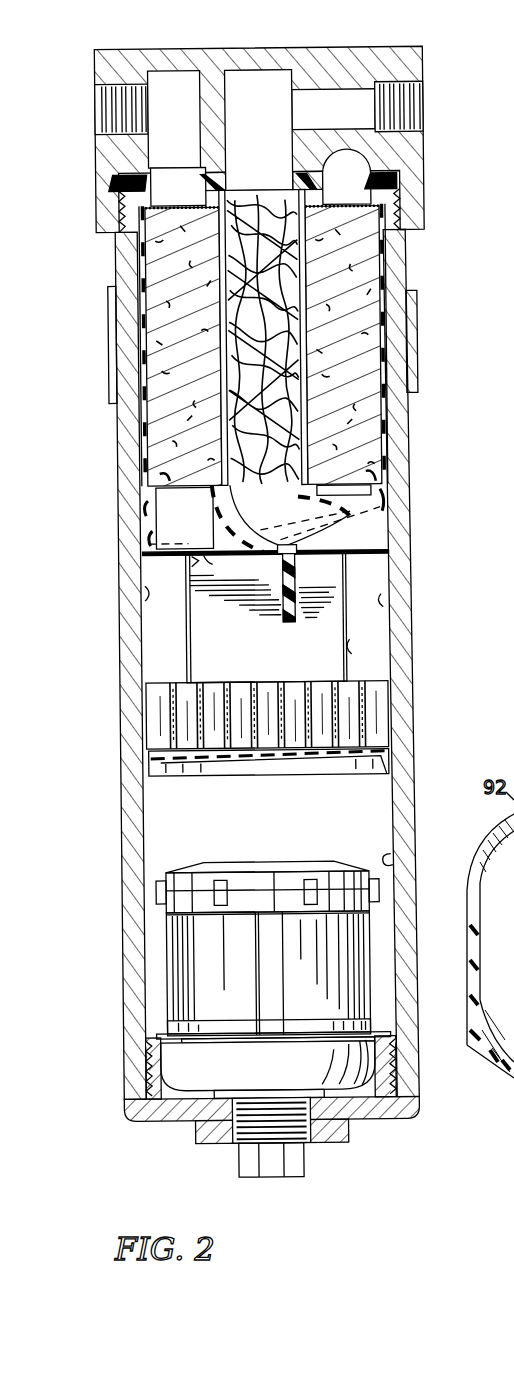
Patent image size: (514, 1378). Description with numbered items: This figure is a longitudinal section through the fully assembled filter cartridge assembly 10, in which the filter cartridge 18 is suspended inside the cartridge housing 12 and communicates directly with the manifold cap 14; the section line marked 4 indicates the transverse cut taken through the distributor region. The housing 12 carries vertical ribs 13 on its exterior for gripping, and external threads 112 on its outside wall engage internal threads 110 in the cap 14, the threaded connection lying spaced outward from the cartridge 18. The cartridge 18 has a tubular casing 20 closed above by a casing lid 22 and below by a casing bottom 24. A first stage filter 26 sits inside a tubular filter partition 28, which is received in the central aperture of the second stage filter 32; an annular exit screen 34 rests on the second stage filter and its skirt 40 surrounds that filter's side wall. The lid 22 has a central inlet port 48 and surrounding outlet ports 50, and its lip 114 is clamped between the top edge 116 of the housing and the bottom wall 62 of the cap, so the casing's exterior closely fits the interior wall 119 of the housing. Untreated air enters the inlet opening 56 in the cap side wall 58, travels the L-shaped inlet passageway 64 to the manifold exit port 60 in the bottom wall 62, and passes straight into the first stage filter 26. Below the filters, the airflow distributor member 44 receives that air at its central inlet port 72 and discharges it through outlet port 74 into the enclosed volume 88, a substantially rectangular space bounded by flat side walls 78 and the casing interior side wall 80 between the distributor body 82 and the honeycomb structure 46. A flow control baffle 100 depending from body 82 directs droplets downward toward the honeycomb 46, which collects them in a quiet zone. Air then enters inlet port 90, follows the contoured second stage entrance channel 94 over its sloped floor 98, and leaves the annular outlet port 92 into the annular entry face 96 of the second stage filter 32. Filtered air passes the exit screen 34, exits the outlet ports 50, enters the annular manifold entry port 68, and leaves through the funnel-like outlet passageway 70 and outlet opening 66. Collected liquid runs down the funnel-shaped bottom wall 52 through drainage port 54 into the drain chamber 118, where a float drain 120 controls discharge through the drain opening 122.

The filter cartridge assembly 10 is at (431, 71).
The cartridge housing 12 is at (116, 956).
The vertical ribs 13 is at (107, 400).
The manifold cap 14 is at (126, 49).
The filter cartridge 18 is at (172, 807).
The tubular casing 20 is at (392, 576).
The casing lid 22 is at (227, 178).
The casing bottom 24 is at (347, 803).
The first stage filter 26 is at (296, 341).
The tubular filter partition 28 is at (240, 200).
The second stage filter 32 is at (384, 419).
The annular exit screen 34 is at (390, 263).
The skirt 40 is at (157, 240).
The airflow distributor member 44 is at (390, 542).
The honeycomb structure 46 is at (358, 714).
The central inlet port 48 is at (283, 180).
The outlet ports 50 is at (187, 177).
The funnel-shaped bottom wall 52 is at (270, 760).
The drainage port 54 is at (238, 762).
The inlet opening 56 is at (423, 93).
The side wall 58 is at (423, 139).
The manifold exit port 60 is at (227, 176).
The bottom wall 62 is at (195, 167).
The inlet passageway 64 is at (376, 90).
The outlet opening 66 is at (96, 94).
The annular manifold entry port 68 is at (152, 143).
The outlet passageway 70 is at (193, 100).
The central inlet port 72 is at (234, 507).
The outlet port 74 is at (309, 583).
The side walls 78 is at (288, 661).
The interior side wall 80 is at (163, 580).
The body 82 is at (390, 500).
The enclosed volume 88 is at (165, 614).
The inlet port 90 is at (213, 555).
The annular outlet port 92 is at (157, 478).
The second stage entrance channel 94 is at (208, 520).
The annular entry face 96 is at (196, 487).
The floor 98 is at (177, 550).
The flow control baffle 100 is at (283, 595).
The internal threads 110 is at (405, 245).
The external threads 112 is at (123, 226).
The lip 114 is at (122, 165).
The top edge 116 is at (124, 170).
The drain chamber 118 is at (372, 833).
The interior wall 119 is at (392, 860).
The float drain 120 is at (359, 1078).
The drain opening 122 is at (300, 1123).
The section line 4- 4 is at (83, 642).